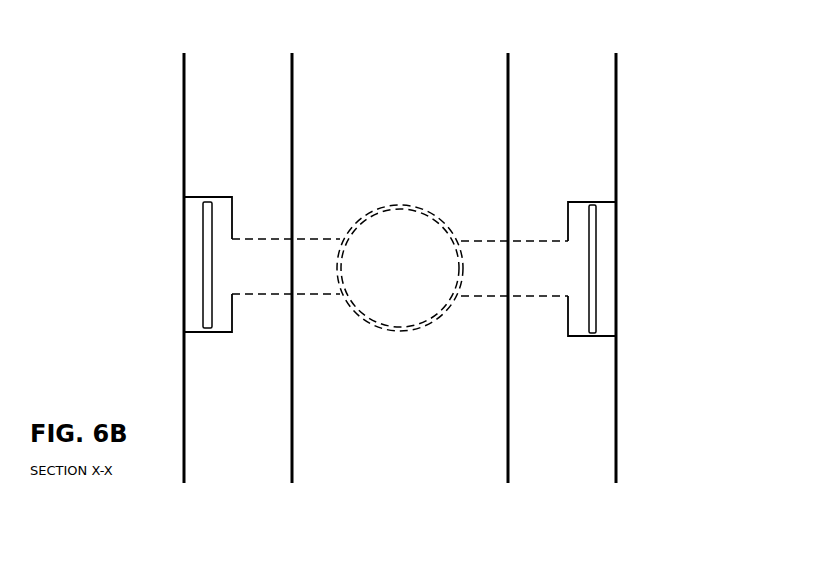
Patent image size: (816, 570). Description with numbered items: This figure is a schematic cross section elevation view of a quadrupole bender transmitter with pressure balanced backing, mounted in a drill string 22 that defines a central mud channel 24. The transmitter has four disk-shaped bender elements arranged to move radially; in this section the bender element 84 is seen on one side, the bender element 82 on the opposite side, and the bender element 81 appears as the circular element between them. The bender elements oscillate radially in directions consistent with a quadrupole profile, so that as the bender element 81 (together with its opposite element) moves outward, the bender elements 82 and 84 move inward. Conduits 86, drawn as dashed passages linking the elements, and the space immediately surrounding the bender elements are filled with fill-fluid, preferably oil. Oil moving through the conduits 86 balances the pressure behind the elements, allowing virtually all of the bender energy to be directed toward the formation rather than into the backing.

The mud channel 24 is at (457, 58).
The drill string 22 is at (616, 142).
The bender element 84 is at (205, 222).
The bender element 82 is at (597, 225).
The bender element 81 is at (391, 206).
The conduits 86 is at (482, 262).